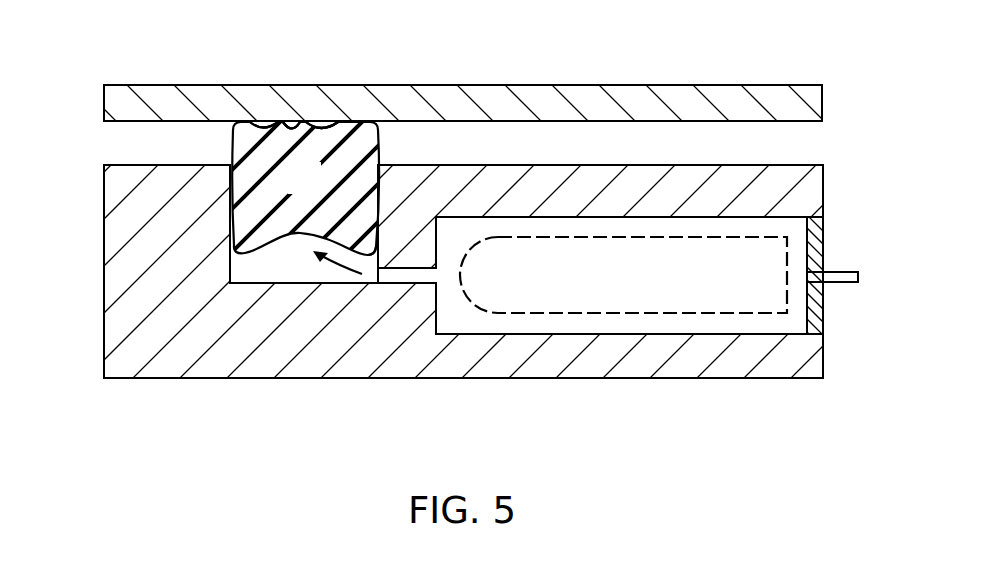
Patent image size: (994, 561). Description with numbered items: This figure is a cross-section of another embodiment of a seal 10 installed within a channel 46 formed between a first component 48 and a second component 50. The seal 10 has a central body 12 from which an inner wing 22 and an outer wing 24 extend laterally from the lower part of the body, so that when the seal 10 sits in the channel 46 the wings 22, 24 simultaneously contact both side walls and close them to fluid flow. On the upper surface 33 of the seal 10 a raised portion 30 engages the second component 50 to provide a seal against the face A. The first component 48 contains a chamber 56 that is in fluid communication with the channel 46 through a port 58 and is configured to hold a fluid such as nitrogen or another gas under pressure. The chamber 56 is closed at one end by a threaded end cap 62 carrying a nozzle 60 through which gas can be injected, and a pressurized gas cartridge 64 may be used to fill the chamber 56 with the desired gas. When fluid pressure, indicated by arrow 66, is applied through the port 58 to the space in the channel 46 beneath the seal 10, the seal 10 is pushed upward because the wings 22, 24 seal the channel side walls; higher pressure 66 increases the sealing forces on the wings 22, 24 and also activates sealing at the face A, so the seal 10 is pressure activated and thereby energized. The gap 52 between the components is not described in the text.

The seal 10 is at (667, 44).
The body 12 is at (318, 191).
The inner wing 22 is at (234, 241).
The outer wing 24 is at (378, 243).
The raised portion 30 is at (287, 122).
The top surface 33 is at (354, 124).
The channel 46 is at (250, 275).
The first component 48 is at (118, 323).
The second component 50 is at (157, 97).
The gap 52 is at (120, 145).
The chamber 56 is at (588, 335).
The port 58 is at (393, 277).
The nozzle 60 is at (840, 271).
The threaded end cap 62 is at (817, 311).
The pressurized gas cartridge 64 is at (641, 313).
The arrow 66 is at (343, 275).
The face A is at (293, 123).